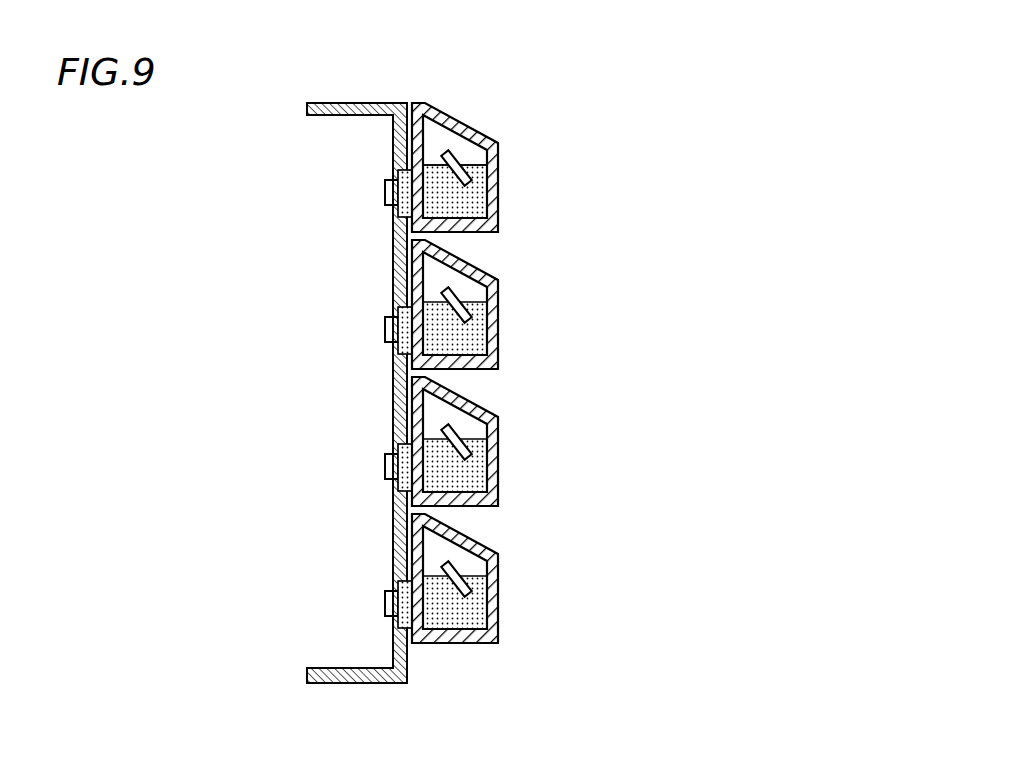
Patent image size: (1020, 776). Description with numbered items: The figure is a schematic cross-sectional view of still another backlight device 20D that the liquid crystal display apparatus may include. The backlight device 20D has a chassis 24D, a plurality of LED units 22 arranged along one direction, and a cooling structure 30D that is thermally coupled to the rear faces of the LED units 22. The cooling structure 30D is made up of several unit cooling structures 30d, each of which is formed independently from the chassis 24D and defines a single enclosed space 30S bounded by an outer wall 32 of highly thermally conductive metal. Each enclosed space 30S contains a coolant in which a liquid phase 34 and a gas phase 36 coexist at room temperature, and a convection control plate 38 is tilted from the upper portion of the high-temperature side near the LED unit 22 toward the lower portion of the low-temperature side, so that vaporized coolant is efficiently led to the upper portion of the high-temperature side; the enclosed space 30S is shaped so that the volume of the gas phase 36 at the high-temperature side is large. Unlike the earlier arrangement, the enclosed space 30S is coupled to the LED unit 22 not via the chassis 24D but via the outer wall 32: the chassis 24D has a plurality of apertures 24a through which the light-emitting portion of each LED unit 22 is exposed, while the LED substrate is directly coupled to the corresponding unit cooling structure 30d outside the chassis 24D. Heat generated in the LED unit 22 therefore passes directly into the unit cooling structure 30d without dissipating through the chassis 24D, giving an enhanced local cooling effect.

The backlight device 20D is at (679, 122).
The LED unit 22 is at (368, 228).
The aperture 24a is at (372, 178).
The chassis 24D is at (347, 668).
The cooling structure 30D is at (613, 82).
The unit cooling structure 30d is at (607, 117).
The enclosed space 30S is at (550, 117).
The outer wall 32 is at (497, 222).
The liquid phase 34 is at (470, 202).
The gas phase 36 is at (481, 142).
The convection control plate 38 is at (462, 157).